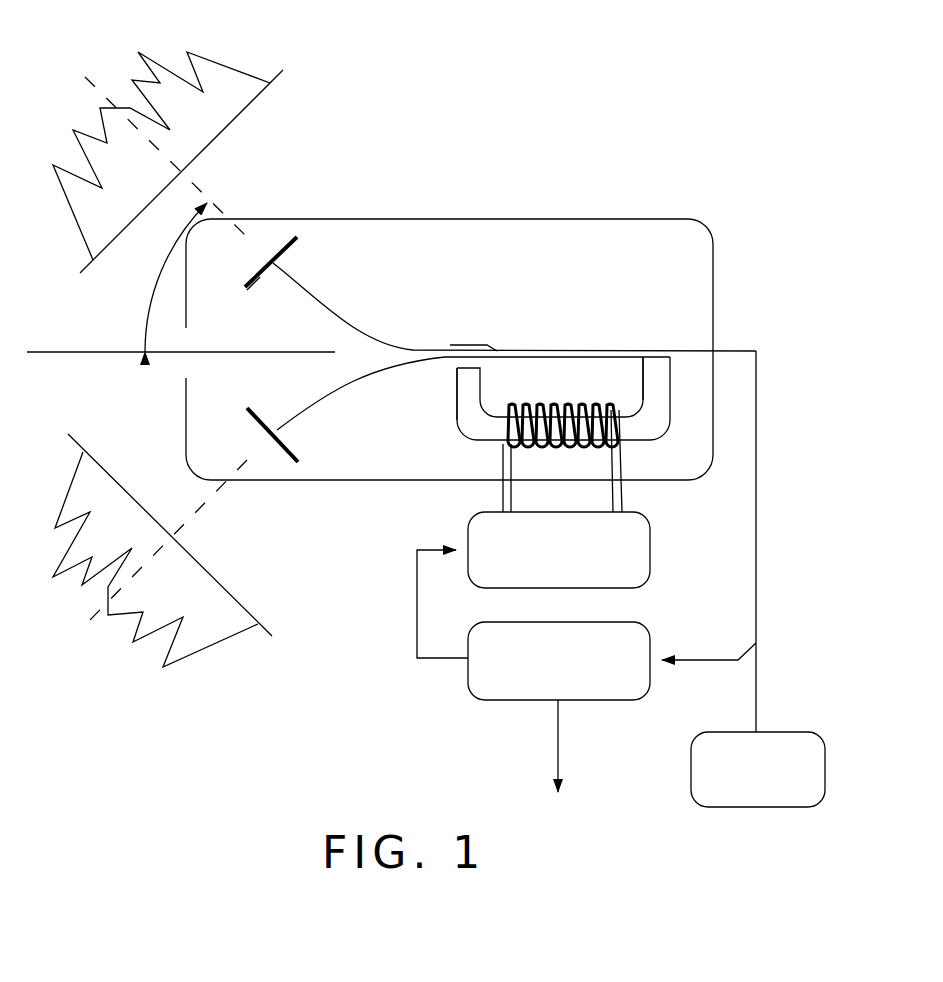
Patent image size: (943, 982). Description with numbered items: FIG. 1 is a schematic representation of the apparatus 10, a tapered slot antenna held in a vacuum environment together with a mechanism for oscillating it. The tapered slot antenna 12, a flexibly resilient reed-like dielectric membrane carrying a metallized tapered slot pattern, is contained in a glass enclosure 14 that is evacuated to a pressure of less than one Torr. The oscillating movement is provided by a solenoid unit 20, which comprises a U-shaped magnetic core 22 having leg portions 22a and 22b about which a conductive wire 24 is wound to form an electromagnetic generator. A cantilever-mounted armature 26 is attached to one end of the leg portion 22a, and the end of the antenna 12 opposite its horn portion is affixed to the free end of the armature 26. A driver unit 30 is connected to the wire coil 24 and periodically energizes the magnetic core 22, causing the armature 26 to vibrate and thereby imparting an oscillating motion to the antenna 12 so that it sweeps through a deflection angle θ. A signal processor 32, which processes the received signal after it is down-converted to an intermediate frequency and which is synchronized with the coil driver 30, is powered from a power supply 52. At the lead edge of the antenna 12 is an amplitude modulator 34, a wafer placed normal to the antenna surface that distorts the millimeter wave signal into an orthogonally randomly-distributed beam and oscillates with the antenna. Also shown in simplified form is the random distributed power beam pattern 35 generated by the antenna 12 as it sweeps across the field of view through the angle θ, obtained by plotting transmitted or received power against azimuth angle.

The apparatus 10 is at (546, 94).
The tapered slot antenna 12 is at (380, 340).
The glass enclosure 14 is at (645, 218).
The solenoid unit 20 is at (712, 503).
The magnetic core 22 is at (458, 432).
The leg portion 22a is at (672, 393).
The leg portion 22b is at (455, 393).
The conductive wire 24 is at (622, 457).
The armature 26 is at (447, 357).
The driver unit 30 is at (650, 548).
The signal processor 32 is at (462, 700).
The amplitude modulator 34 is at (288, 243).
The beam pattern 35 is at (100, 115).
The power supply 52 is at (757, 807).